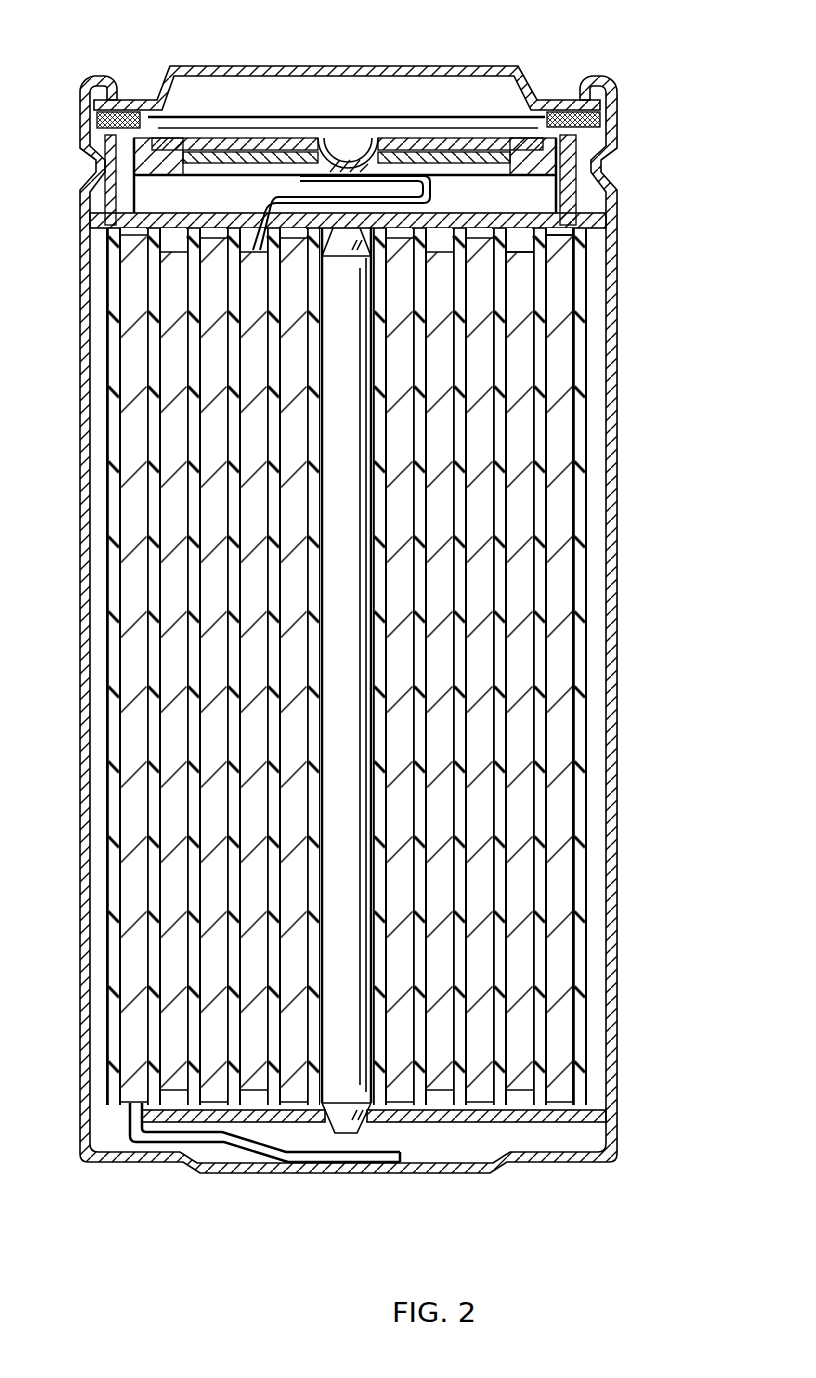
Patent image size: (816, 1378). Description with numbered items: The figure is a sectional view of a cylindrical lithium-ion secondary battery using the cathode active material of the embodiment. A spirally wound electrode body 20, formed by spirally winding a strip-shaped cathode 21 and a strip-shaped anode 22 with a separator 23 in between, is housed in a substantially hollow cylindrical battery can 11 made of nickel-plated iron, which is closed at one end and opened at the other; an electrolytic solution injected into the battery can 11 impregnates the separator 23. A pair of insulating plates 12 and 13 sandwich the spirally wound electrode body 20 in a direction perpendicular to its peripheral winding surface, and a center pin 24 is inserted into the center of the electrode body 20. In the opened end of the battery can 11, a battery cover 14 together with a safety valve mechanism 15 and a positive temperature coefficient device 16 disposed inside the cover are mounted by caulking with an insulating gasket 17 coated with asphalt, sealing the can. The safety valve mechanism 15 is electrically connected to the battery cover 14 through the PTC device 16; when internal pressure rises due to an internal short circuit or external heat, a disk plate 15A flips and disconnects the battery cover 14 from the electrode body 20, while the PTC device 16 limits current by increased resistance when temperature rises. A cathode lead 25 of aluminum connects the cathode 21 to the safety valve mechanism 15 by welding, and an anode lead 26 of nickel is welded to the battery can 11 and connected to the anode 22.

The battery can 11 is at (620, 284).
The insulating plate 12 is at (612, 221).
The insulating plate 13 is at (588, 1112).
The battery cover 14 is at (312, 66).
The safety valve mechanism 15 is at (482, 124).
The disk plate 15A is at (437, 138).
The positive temperature coefficient device 16 is at (607, 122).
The gasket 17 is at (598, 179).
The spirally wound electrode body 20 is at (605, 413).
The cathode 21 is at (523, 500).
The anode 22 is at (560, 560).
The separator 23 is at (540, 633).
The center pin 24 is at (340, 684).
The cathode lead 25 is at (326, 172).
The anode lead 26 is at (232, 1148).